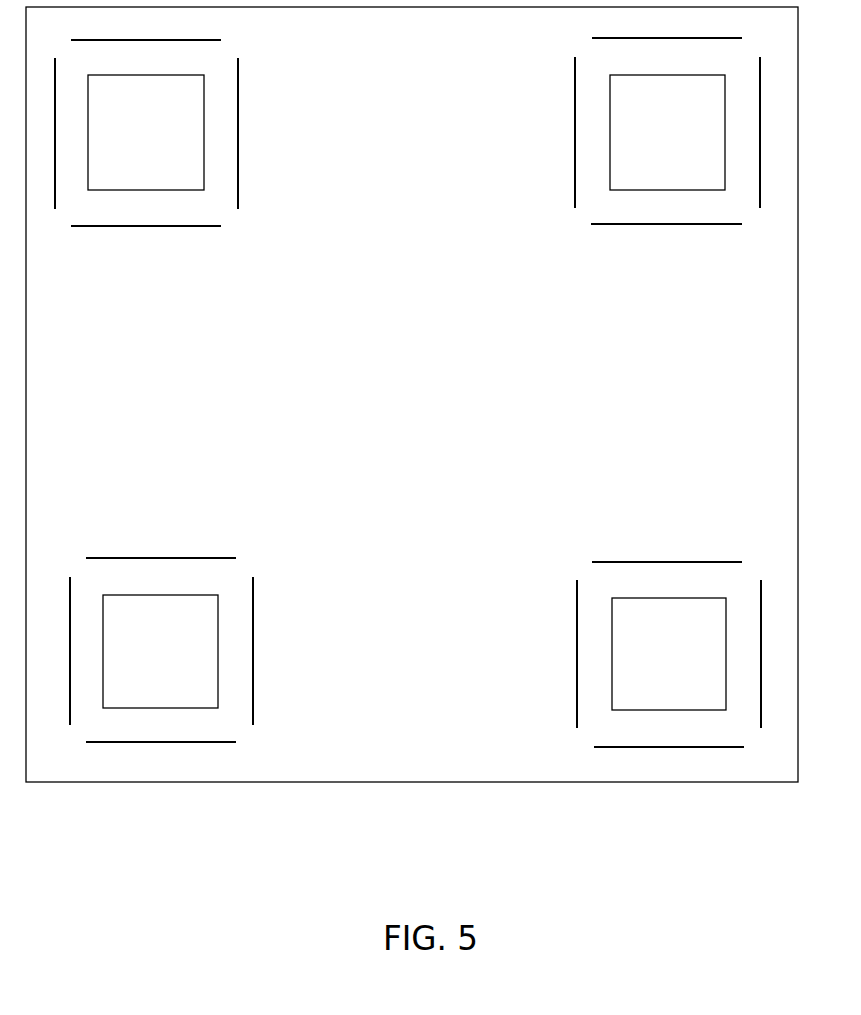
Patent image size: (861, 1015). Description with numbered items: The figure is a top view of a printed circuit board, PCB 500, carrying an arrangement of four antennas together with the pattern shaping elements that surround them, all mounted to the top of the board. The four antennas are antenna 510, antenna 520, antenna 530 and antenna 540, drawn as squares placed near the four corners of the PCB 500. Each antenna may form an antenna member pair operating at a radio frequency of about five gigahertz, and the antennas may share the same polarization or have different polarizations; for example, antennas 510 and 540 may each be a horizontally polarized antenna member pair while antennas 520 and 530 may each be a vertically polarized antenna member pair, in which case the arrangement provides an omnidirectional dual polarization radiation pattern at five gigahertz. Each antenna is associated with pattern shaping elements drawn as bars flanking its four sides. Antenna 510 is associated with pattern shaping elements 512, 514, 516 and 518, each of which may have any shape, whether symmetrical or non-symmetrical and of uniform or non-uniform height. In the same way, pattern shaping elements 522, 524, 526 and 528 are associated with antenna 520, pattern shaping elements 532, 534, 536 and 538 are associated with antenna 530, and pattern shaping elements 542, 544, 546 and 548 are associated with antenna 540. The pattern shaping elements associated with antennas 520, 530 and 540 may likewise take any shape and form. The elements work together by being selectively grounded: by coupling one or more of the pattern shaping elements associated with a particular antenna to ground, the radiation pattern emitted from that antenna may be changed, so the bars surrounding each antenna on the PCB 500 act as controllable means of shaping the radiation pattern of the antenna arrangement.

The PCB 500 is at (412, 394).
The antenna 510 is at (146, 132).
The pattern shaping element 512 is at (221, 40).
The pattern shaping element 514 is at (238, 139).
The pattern shaping element 516 is at (55, 200).
The pattern shaping element 518 is at (145, 226).
The antenna 520 is at (667, 132).
The pattern shaping element 522 is at (592, 38).
The pattern shaping element 524 is at (575, 134).
The pattern shaping element 526 is at (760, 200).
The pattern shaping element 528 is at (664, 224).
The antenna 530 is at (160, 651).
The pattern shaping element 532 is at (166, 558).
The pattern shaping element 534 is at (70, 580).
The pattern shaping element 536 is at (253, 644).
The pattern shaping element 538 is at (226, 742).
The antenna 540 is at (669, 654).
The pattern shaping element 542 is at (670, 562).
The pattern shaping element 544 is at (761, 582).
The pattern shaping element 546 is at (577, 648).
The pattern shaping element 548 is at (600, 748).